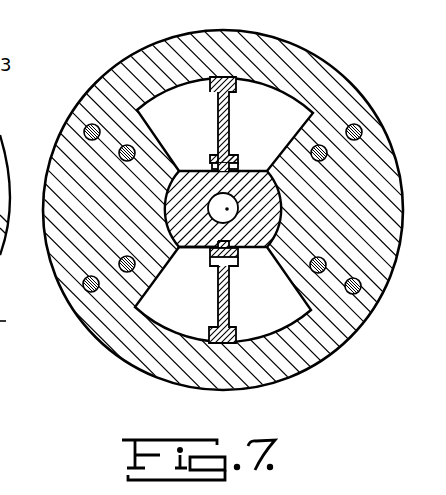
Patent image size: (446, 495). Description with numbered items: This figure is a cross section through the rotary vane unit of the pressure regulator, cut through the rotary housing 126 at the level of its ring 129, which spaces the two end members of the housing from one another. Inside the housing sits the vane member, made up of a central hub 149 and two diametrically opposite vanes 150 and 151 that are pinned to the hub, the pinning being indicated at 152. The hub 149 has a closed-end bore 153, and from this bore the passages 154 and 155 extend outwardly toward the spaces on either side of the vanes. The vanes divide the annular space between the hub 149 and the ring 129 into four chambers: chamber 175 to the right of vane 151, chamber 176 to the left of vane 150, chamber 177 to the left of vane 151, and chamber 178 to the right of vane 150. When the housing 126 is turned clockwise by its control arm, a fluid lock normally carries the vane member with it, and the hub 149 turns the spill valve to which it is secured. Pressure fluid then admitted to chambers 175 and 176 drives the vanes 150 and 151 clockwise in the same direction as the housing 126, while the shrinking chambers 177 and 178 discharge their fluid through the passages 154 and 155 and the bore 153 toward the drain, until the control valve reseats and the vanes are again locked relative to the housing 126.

The rotary housing 126 is at (70, 317).
The ring 129 is at (88, 260).
The hub 149 is at (195, 188).
The vane 150 is at (230, 97).
The vane 151 is at (229, 318).
The pin 152 is at (238, 254).
The bore 153 is at (246, 170).
The passage 154 is at (226, 207).
The passage 155 is at (194, 249).
The chamber 175 is at (160, 107).
The chamber 176 is at (293, 308).
The chamber 177 is at (170, 315).
The chamber 178 is at (283, 100).